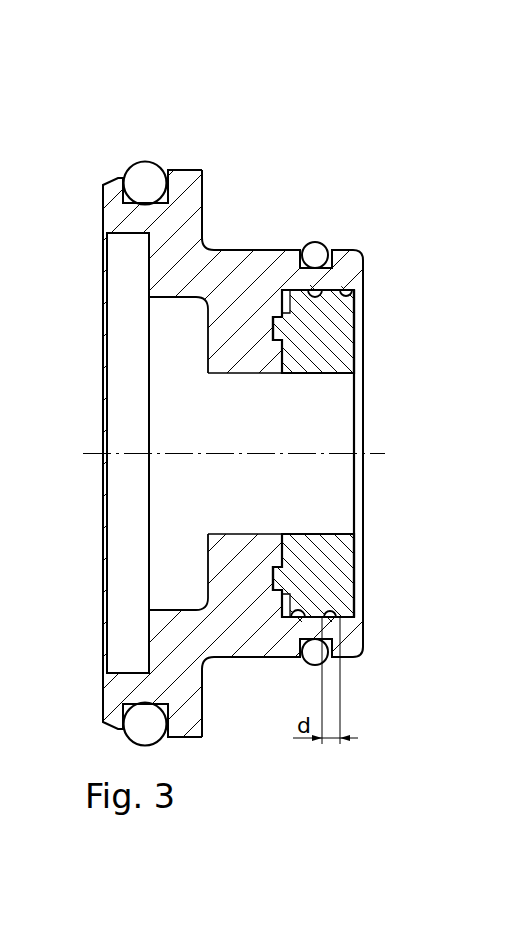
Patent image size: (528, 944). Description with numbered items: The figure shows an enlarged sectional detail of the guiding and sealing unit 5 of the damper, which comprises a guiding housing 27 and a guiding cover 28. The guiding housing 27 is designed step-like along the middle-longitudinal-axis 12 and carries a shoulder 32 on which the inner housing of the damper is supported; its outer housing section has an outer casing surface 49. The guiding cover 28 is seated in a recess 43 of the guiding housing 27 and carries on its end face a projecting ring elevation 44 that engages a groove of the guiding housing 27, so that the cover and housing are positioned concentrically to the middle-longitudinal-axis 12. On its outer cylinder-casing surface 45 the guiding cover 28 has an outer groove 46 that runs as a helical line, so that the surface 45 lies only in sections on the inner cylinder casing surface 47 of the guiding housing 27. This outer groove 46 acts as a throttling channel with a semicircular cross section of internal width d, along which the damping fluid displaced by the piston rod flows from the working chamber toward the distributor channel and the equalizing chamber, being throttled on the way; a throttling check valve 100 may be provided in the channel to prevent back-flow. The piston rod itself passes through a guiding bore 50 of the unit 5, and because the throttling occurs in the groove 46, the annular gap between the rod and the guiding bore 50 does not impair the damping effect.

The guiding and sealing unit 5 is at (294, 143).
The middle-longitudinal-axis 12 is at (370, 453).
The guiding housing 27 is at (188, 168).
The guiding cover 28 is at (351, 345).
The shoulder 32 is at (203, 197).
The recess 43 is at (372, 578).
The projecting ring elevation 44 is at (280, 329).
The outer cylinder-casing surface 45 is at (330, 287).
The outer groove 46 is at (355, 291).
The inner cylinder casing surface 47 is at (358, 613).
The outer casing surface 49 is at (181, 168).
The guiding bore 50 is at (358, 417).
The throttling check valve 100 is at (318, 292).